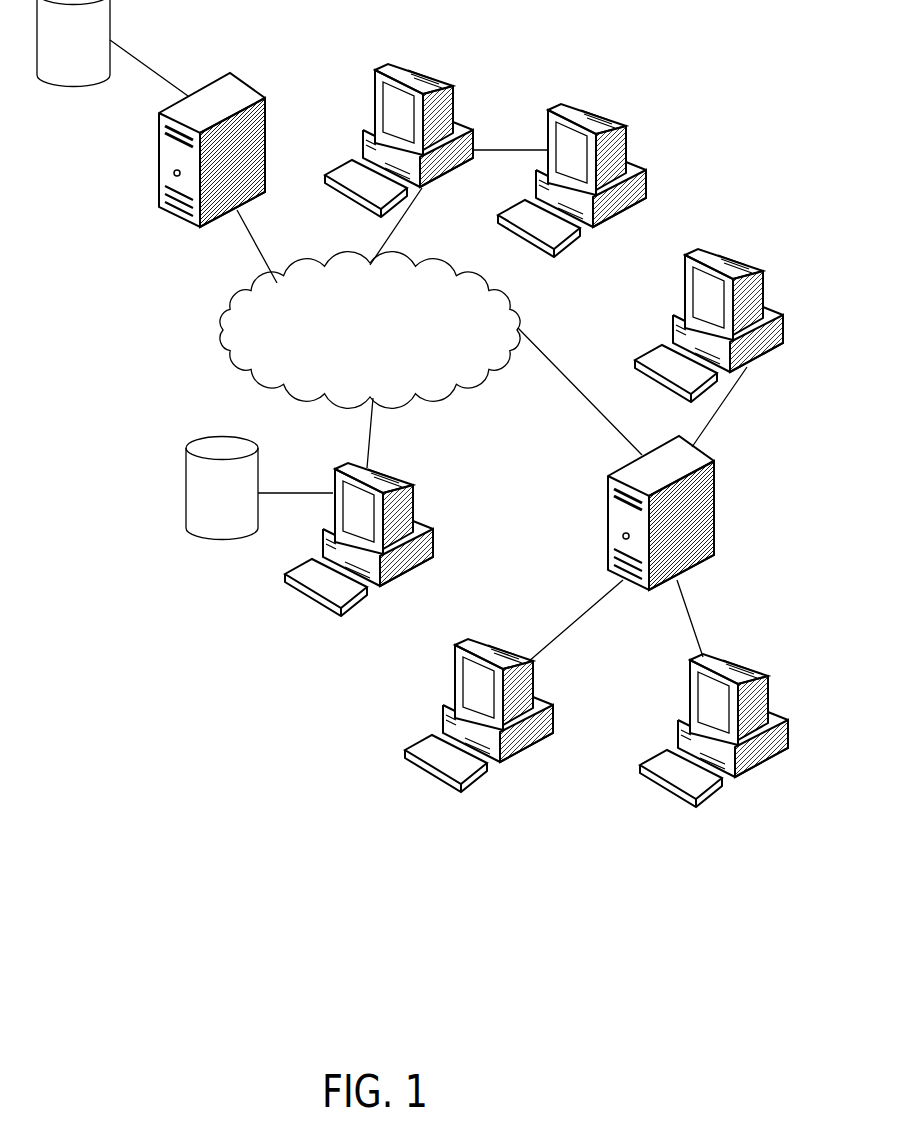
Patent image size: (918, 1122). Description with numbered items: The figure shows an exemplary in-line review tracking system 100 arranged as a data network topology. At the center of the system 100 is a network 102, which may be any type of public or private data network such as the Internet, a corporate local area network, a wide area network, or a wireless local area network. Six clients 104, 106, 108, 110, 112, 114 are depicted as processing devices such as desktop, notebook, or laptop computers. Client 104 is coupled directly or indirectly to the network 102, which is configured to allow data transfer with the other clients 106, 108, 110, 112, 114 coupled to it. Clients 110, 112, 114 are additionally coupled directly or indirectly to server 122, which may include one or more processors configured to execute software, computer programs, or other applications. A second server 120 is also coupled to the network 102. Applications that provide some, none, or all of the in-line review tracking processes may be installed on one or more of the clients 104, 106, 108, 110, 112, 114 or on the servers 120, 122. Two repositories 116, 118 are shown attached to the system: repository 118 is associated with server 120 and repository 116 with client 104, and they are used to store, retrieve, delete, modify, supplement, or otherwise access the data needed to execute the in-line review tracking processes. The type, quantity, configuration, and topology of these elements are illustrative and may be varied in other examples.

The system 100 is at (90, 831).
The network 102 is at (392, 373).
The client 104 is at (383, 470).
The client 106 is at (453, 67).
The client 108 is at (627, 110).
The client 110 is at (762, 273).
The client 112 is at (762, 682).
The client 114 is at (475, 645).
The repository 116 is at (240, 502).
The repository 118 is at (90, 52).
The server 120 is at (240, 82).
The server 122 is at (720, 488).